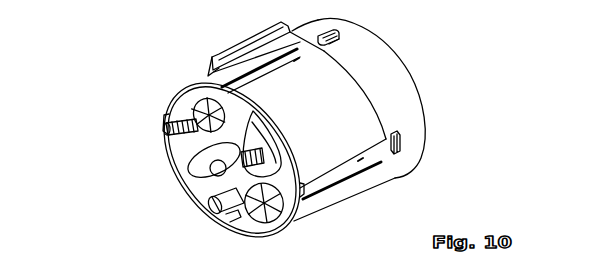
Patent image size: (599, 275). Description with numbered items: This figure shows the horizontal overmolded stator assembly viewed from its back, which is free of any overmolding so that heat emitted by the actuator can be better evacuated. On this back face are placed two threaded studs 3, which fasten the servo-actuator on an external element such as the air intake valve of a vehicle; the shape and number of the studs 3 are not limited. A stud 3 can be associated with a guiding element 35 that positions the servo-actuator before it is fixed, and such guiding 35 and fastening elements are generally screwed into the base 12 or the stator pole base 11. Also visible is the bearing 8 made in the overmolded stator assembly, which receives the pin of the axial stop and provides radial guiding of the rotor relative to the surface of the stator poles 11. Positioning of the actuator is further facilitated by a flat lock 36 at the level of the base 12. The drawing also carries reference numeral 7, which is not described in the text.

The stud 3 is at (202, 161).
The latching clip 7 is at (343, 38).
The bearing 8 is at (234, 158).
The stator poles 11 is at (276, 214).
The base 12 is at (228, 219).
The guiding element 35 is at (216, 207).
The flat lock 36 is at (221, 86).